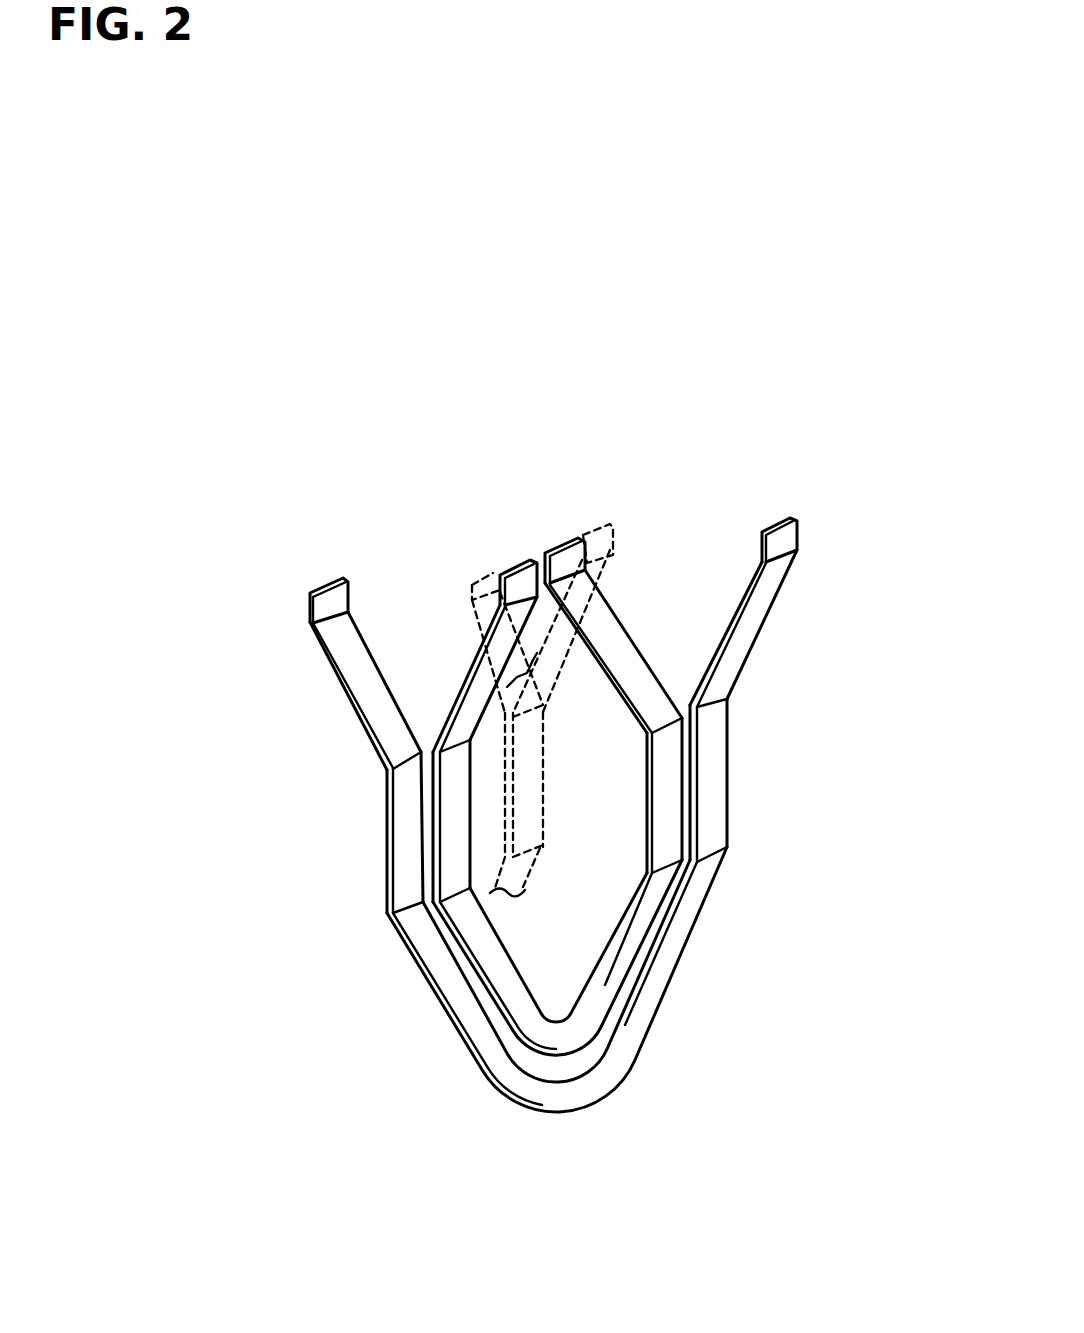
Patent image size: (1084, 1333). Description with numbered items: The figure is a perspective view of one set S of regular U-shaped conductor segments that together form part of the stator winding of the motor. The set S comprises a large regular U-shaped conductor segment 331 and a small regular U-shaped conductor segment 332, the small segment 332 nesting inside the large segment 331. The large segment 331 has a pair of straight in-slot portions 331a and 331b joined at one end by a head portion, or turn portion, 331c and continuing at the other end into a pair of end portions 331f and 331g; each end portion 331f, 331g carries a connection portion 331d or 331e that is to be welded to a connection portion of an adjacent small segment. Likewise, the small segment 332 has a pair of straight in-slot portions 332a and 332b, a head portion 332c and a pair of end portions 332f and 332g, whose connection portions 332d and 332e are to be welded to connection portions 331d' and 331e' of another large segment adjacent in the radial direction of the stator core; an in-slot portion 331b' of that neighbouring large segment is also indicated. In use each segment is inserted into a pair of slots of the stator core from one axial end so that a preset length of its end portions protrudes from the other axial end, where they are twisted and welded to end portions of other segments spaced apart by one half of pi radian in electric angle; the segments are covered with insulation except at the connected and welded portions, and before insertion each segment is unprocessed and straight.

The set of regular U-shaped conductor segments S is at (698, 344).
The large regular U-shaped conductor segment 331 is at (768, 652).
The in-slot portion 331a is at (405, 795).
The in-slot portion 331b is at (790, 780).
The right straight portion of outer spring in free state 331b' is at (684, 800).
The head portion 331c is at (547, 1100).
The connection portion 331d is at (259, 625).
The connection portion 331d' is at (439, 596).
The connection portion 331e is at (845, 517).
The connection portion 331e' is at (605, 590).
The end portion 331f is at (347, 660).
The end portion 331g is at (768, 590).
The small regular U-shaped conductor segment 332 is at (648, 657).
The in-slot portion 332a is at (455, 838).
The in-slot portion 332b is at (667, 847).
The head portion 332c is at (557, 1042).
The connection portion 332d is at (523, 558).
The connection portion 332e is at (576, 545).
The end portion 332f is at (479, 692).
The end portion 332g is at (613, 643).